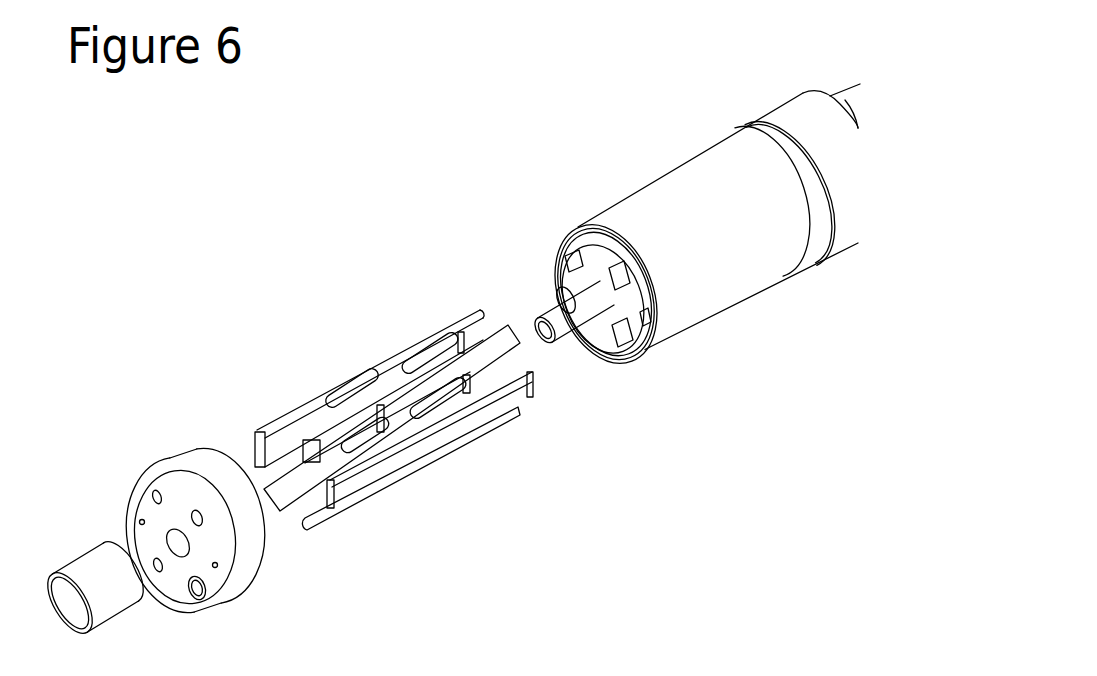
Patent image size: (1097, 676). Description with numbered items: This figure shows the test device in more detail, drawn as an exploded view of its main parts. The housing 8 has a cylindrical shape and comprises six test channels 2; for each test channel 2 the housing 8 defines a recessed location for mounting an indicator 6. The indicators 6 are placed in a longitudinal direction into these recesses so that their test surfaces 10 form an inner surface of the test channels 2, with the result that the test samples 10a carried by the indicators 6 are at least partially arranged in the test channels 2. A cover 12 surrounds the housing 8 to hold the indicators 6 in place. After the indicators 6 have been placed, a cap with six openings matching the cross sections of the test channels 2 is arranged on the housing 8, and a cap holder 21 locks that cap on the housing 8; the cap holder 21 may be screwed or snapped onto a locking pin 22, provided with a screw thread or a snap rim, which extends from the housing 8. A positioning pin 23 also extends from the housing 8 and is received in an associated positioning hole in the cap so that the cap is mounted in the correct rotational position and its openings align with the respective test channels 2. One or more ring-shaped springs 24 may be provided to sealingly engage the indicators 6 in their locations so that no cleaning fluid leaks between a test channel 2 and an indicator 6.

The test channel 2 is at (645, 313).
The indicator 6 is at (328, 428).
The housing 8 is at (562, 250).
The test surface 10 is at (430, 385).
The test sample 10a is at (466, 372).
The cover 12 is at (677, 166).
The cap holder 21 is at (95, 537).
The locking pin 22 is at (533, 312).
The positioning pin 23 is at (548, 283).
The ring-shaped spring 24 is at (579, 226).